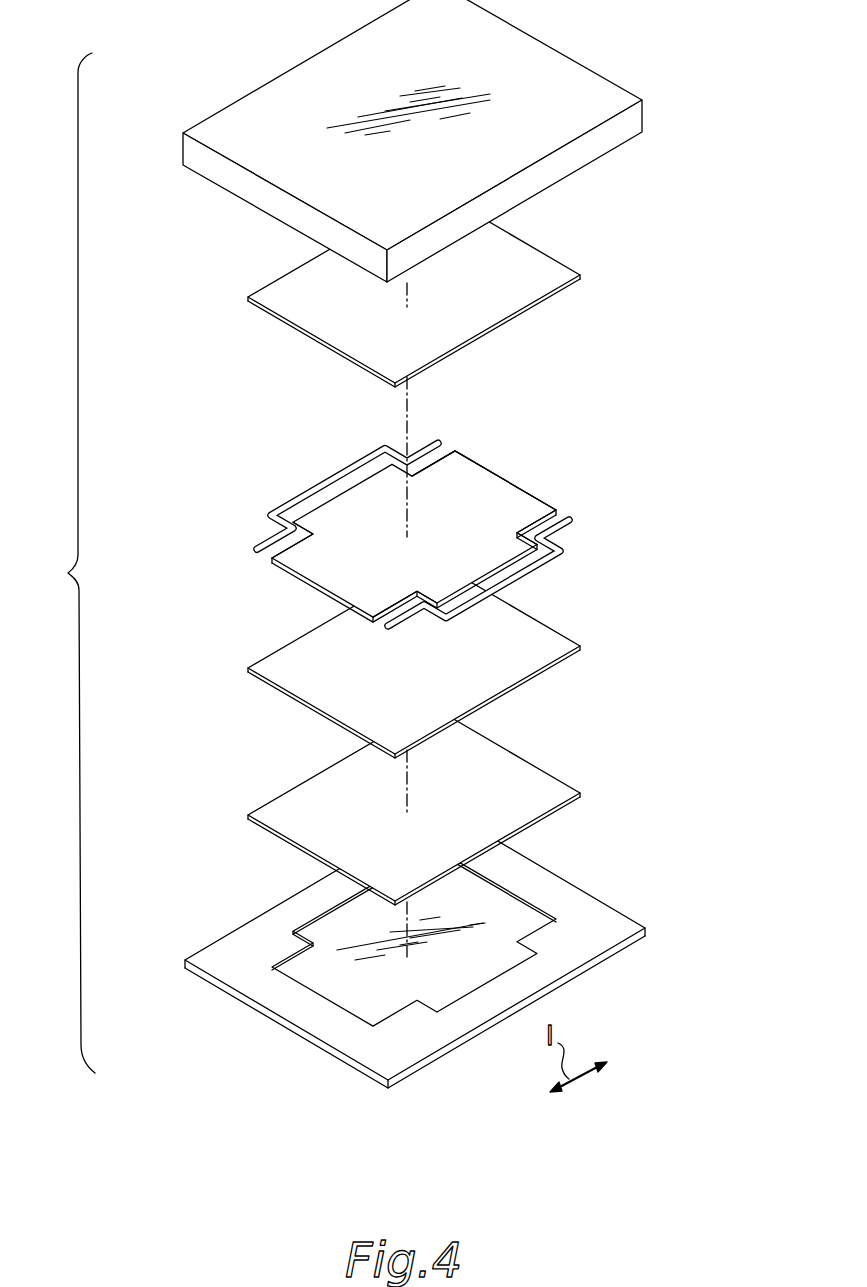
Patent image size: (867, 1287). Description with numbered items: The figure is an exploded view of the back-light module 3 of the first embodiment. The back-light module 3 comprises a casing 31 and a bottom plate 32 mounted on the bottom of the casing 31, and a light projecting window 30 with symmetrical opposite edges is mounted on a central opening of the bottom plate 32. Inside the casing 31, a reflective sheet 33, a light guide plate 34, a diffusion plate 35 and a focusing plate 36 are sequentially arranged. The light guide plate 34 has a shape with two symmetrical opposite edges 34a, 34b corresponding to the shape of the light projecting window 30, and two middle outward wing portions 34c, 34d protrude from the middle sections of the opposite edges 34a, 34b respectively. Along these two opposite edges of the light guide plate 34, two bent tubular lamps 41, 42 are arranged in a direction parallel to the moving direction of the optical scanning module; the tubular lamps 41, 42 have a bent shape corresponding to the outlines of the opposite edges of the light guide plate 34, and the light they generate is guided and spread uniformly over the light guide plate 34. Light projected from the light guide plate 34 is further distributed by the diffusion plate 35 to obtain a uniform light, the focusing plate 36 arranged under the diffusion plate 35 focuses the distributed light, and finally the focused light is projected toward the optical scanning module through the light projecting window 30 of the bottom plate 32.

The back-light module 3 is at (67, 563).
The light projecting window 30 is at (332, 985).
The casing 31 is at (570, 80).
The bottom plate 32 is at (557, 962).
The reflective sheet 33 is at (540, 270).
The light guide plate 34 is at (508, 466).
The symmetrical opposite edge 34a is at (452, 445).
The symmetrical opposite edge 34b is at (566, 508).
The middle outward wing portion 34c is at (330, 510).
The middle outward wing portion 34d is at (497, 560).
The diffusion plate 35 is at (555, 650).
The focusing plate 36 is at (555, 800).
The bent tubular lamp 41 is at (353, 475).
The bent tubular lamp 42 is at (563, 556).